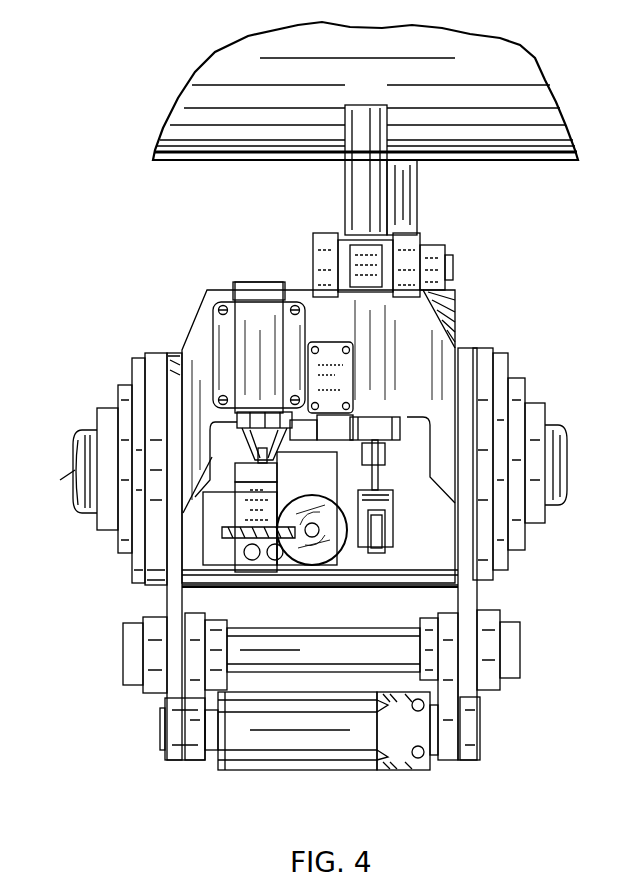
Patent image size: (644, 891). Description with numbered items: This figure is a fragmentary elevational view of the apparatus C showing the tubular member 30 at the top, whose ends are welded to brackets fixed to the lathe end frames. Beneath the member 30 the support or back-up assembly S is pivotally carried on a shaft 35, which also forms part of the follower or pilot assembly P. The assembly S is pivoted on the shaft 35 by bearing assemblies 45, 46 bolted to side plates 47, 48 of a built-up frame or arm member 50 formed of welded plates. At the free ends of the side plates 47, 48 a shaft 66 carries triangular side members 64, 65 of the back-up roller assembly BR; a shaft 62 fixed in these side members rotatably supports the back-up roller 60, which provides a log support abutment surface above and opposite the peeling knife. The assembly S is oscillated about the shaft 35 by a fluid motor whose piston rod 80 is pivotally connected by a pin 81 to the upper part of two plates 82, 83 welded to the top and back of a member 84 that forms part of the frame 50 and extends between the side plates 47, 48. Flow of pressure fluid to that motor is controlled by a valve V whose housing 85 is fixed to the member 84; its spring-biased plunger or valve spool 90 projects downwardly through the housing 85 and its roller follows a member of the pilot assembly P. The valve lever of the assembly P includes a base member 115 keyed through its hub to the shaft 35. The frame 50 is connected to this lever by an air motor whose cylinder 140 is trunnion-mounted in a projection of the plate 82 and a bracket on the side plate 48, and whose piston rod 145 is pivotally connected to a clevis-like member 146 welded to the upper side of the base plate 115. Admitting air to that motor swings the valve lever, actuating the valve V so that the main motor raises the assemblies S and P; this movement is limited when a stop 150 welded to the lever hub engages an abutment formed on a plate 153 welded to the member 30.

The apparatus C is at (548, 120).
The tubular member 30 is at (310, 162).
The piston rod 80 is at (387, 142).
The plate 153 is at (412, 182).
The plate 82 is at (330, 233).
The plate 83 is at (416, 235).
The pin 81 is at (313, 260).
The stop 150 is at (446, 272).
The member 84 is at (433, 470).
The base member 115 is at (443, 550).
The frame or arm member 50 is at (164, 600).
The side plate 48 is at (463, 347).
The side plate 47 is at (170, 353).
The bearing assembly 45 is at (106, 457).
The shaft 35 is at (73, 466).
The bearing assembly 46 is at (515, 378).
The valve V is at (243, 300).
The valve housing 85 is at (298, 340).
The plunger or valve spool 90 is at (272, 462).
The follower or pilot assembly P is at (338, 480).
The cylinder 140 is at (386, 447).
The piston rod 145 is at (393, 498).
The clevis-like member 146 is at (388, 551).
The support or back-up assembly S is at (483, 602).
The shaft 66 is at (347, 628).
The back-up roller 60 is at (283, 770).
The shaft 62 is at (380, 768).
The side member 64 is at (193, 765).
The back-up roller assembly BR is at (177, 767).
The side member 65 is at (455, 743).